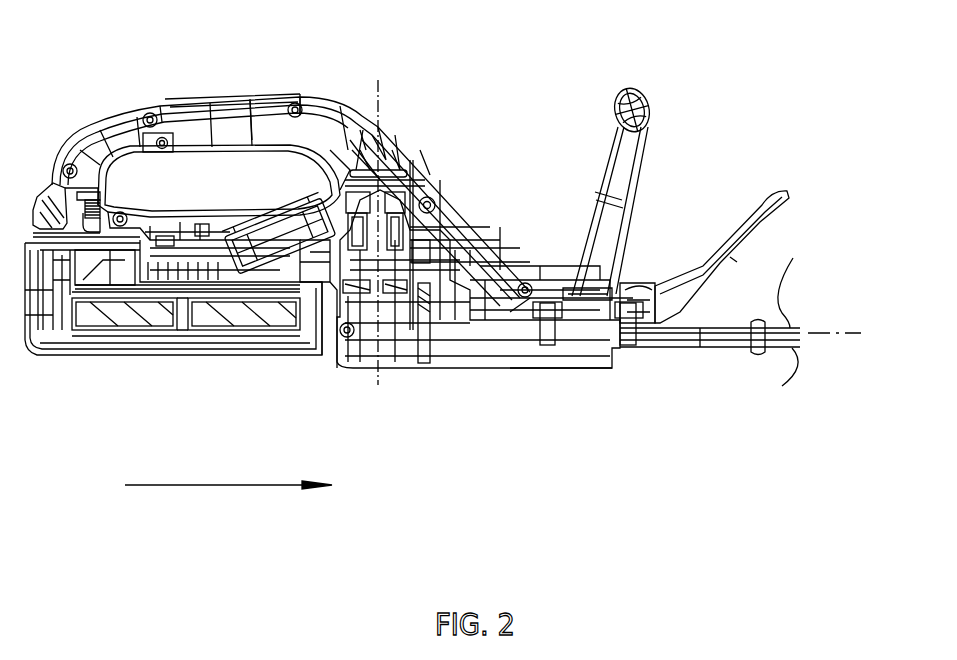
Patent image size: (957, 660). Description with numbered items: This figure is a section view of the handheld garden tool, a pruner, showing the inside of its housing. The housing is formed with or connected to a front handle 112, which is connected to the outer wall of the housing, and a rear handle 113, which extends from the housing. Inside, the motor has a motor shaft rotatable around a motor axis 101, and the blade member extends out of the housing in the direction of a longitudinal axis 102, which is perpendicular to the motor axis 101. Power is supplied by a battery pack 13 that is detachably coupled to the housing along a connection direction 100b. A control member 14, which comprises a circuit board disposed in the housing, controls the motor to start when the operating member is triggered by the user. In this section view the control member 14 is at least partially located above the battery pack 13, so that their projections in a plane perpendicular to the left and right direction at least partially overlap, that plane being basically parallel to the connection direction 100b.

The rear handle 113 is at (207, 120).
The motor axis 101 is at (378, 86).
The front handle 112 is at (642, 93).
The longitudinal axis 102 is at (835, 333).
The battery pack 13 is at (147, 318).
The control member 14 is at (278, 262).
The connection direction 100b is at (228, 502).